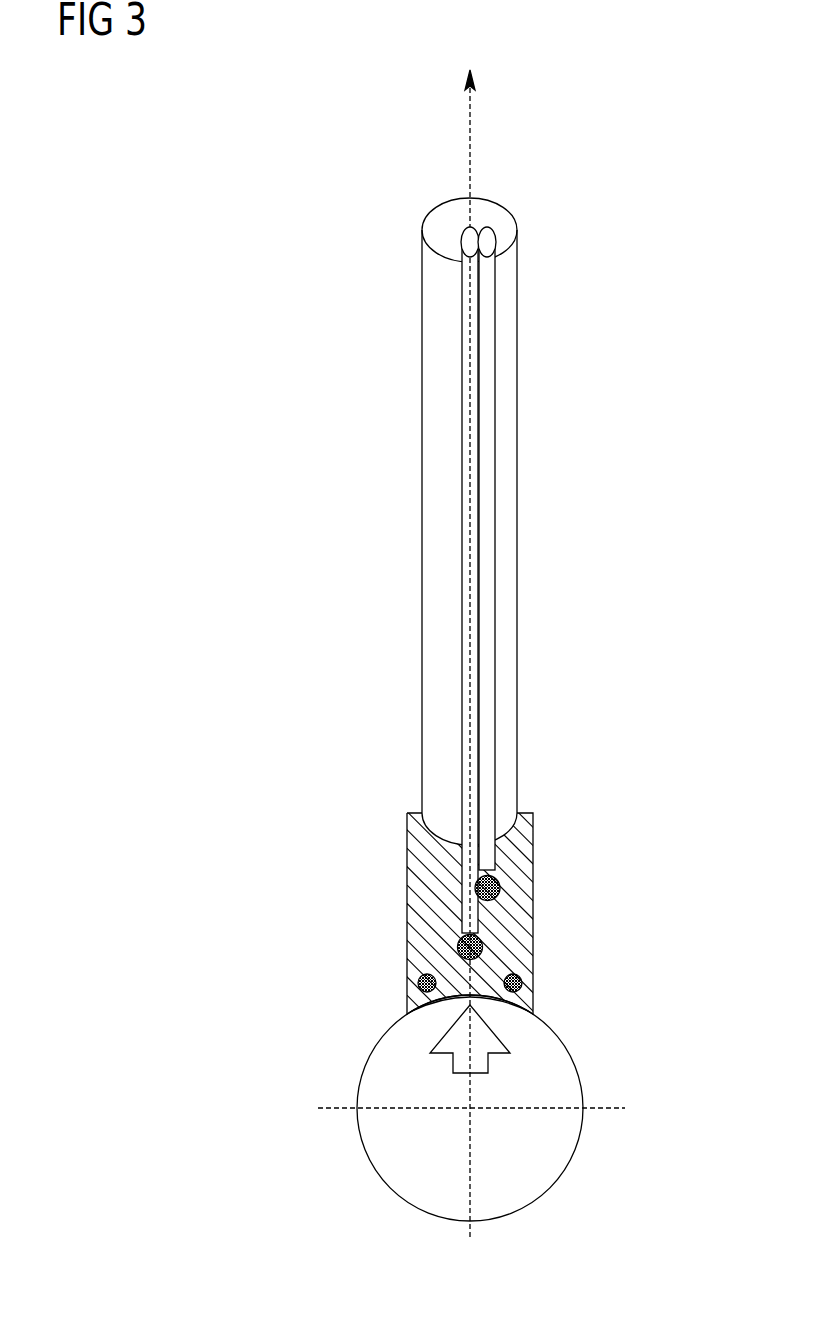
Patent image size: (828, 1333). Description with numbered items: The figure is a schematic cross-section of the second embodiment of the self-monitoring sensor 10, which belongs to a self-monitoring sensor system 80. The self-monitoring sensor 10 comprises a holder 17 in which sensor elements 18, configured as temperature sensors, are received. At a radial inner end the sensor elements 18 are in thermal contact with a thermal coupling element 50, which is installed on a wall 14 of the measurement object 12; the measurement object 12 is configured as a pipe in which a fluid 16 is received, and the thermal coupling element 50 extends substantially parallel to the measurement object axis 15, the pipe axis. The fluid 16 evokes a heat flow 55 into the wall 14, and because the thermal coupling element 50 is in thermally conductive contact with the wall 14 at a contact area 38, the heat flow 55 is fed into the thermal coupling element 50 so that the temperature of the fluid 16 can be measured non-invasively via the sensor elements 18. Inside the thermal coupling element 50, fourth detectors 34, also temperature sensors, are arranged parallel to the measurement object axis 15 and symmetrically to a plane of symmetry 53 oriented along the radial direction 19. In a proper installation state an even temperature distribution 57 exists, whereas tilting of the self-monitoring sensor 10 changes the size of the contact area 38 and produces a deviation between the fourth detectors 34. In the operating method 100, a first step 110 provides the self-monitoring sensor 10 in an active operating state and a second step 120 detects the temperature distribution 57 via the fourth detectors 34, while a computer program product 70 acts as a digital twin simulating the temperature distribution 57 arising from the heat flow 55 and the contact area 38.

The computer program product 70 is at (424, 655).
The self-monitoring sensor system 80 is at (424, 655).
The operating method 100 is at (197, 111).
The radial direction 19 is at (470, 117).
The self-monitoring sensor 10 is at (497, 505).
The first step 110 is at (517, 404).
The holder 17 is at (422, 400).
The sensor elements 18 is at (464, 463).
The plane of symmetry 53 is at (478, 363).
The thermal coupling element 50 is at (474, 915).
The temperature distribution 57 is at (474, 915).
The second step 120 is at (520, 855).
The fourth detectors 34 is at (418, 985).
The contact area 38 is at (418, 1005).
The measurement object 12 is at (450, 1108).
The wall 14 is at (360, 1143).
The fluid 16 is at (560, 1067).
The heat flow 55 is at (450, 1068).
The measurement object axis 15 is at (470, 1108).